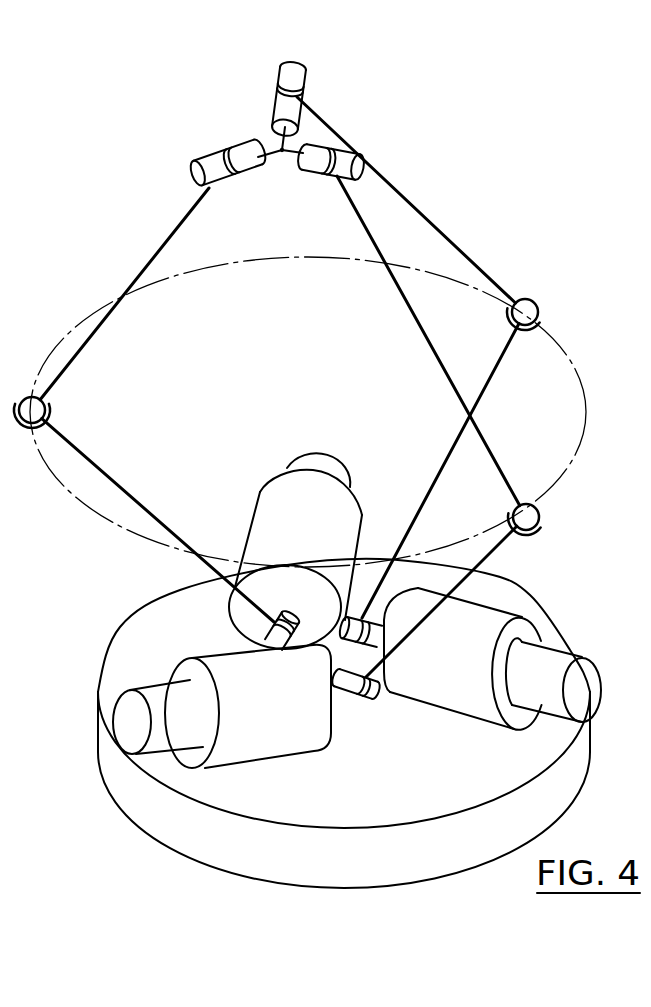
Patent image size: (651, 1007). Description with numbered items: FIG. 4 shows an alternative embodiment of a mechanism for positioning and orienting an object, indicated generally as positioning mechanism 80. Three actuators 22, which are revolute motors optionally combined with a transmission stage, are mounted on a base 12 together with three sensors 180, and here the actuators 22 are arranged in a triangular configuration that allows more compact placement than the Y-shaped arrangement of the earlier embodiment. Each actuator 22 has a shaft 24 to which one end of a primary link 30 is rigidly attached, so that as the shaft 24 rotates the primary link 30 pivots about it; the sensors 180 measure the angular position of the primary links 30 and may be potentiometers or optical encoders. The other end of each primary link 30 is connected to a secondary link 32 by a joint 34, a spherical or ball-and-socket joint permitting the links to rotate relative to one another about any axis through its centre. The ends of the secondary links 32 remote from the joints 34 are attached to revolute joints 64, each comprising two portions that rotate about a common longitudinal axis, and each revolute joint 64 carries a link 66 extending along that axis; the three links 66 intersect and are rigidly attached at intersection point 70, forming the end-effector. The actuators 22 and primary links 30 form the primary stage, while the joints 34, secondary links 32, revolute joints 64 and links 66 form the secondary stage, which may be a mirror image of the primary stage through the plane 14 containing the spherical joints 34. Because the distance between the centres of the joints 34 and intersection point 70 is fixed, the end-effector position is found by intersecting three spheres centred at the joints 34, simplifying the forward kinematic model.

The base 12 is at (108, 763).
The plane 14 is at (85, 506).
The actuator 22 is at (265, 510).
The shaft 24 is at (350, 703).
The primary link 30 is at (123, 490).
The secondary link 32 is at (104, 323).
The joint 34 is at (30, 397).
The revolute joint 64 is at (280, 78).
The link 66 is at (296, 147).
The intersection point 70 is at (283, 155).
The positioning mechanism 80 is at (412, 125).
The sensor 180 is at (319, 458).